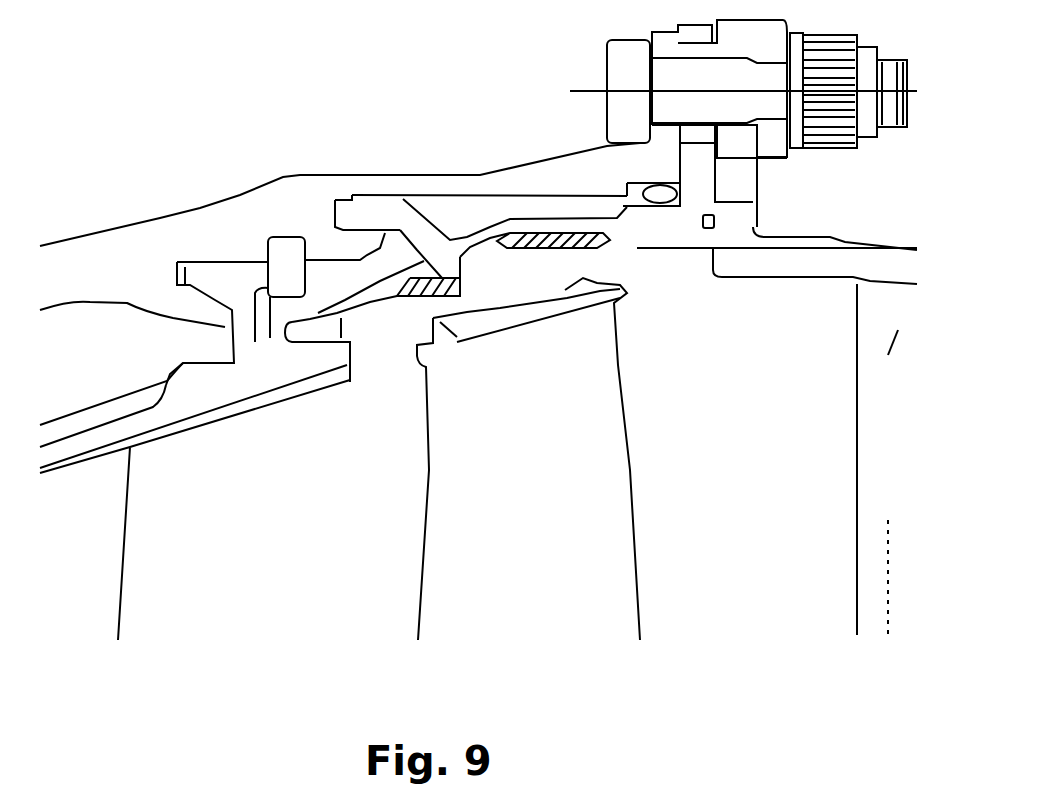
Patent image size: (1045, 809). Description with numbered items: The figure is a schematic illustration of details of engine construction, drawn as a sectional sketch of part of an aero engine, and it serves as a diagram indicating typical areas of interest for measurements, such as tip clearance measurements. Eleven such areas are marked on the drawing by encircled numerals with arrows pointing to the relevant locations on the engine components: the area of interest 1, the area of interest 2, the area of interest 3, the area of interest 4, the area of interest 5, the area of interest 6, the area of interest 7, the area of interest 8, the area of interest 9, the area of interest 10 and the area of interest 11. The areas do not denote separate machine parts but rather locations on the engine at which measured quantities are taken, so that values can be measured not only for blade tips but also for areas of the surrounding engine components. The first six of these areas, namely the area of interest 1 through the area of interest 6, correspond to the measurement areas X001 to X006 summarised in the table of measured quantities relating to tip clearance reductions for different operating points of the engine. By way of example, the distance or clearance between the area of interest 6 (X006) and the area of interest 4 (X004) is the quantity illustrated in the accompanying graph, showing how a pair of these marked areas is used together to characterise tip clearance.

The area of interest 1 is at (212, 376).
The area of interest 2 is at (313, 355).
The area of interest 3 is at (383, 185).
The area of interest 4 is at (460, 348).
The area of interest 5 is at (666, 167).
The area of interest 6 is at (660, 245).
The area of interest 7 is at (728, 299).
The area of interest 8 is at (474, 274).
The area of interest 9 is at (455, 317).
The area of interest 10 is at (322, 213).
The area of interest 11 is at (218, 337).